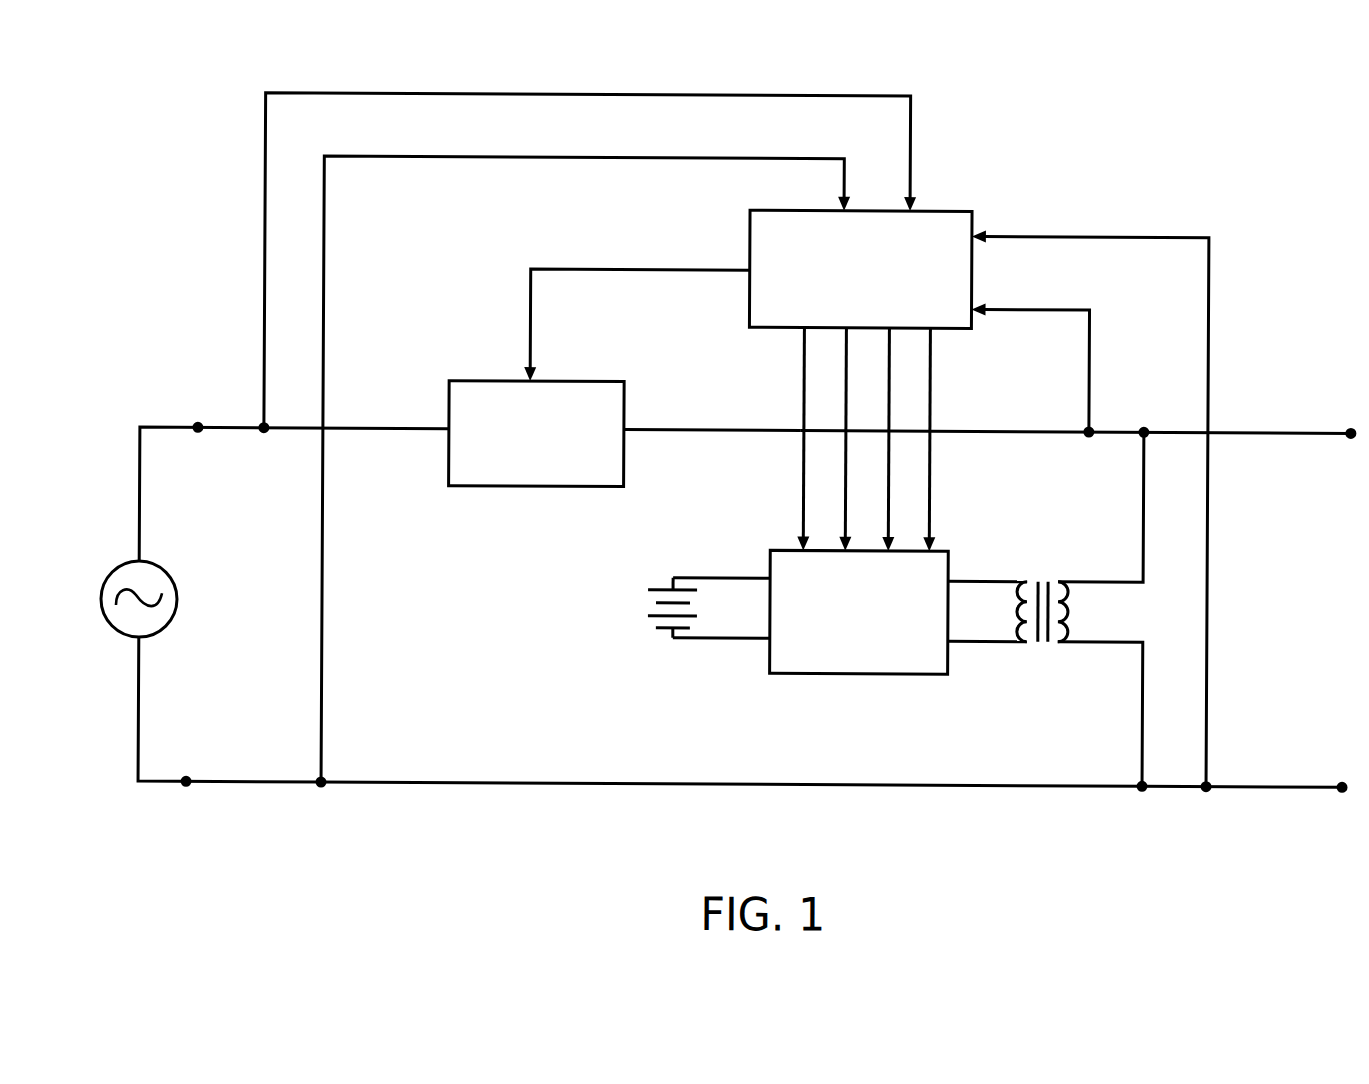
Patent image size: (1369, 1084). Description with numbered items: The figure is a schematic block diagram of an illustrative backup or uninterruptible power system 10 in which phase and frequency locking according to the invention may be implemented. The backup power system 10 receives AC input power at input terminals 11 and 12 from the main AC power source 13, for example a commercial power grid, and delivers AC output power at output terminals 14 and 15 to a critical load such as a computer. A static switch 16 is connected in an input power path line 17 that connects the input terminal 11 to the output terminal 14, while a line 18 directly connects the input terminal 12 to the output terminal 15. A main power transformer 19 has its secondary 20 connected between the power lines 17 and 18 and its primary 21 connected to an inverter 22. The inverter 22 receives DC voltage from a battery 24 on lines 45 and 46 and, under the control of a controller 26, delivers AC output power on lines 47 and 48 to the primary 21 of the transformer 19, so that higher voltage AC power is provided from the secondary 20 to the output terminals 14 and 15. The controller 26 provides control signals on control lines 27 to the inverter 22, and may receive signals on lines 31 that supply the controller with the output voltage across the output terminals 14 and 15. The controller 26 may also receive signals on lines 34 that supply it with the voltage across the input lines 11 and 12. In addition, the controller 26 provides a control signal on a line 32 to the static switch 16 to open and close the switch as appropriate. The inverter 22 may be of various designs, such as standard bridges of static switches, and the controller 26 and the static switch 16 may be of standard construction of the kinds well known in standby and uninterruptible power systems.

The backup power system 10 is at (1032, 226).
The input terminal 11 is at (228, 423).
The input terminal 12 is at (250, 786).
The main AC power source 13 is at (110, 578).
The output terminal 14 is at (1255, 428).
The output terminal 15 is at (1272, 787).
The static switch 16 is at (480, 380).
The input power path line 17 is at (712, 392).
The line 18 is at (490, 785).
The main power transformer 19 is at (1042, 645).
The secondary 20 is at (1070, 612).
The primary 21 is at (1028, 578).
The inverter 22 is at (818, 673).
The battery 24 is at (665, 580).
The controller 26 is at (925, 210).
The control lines 27 is at (803, 398).
The lines 31 is at (1070, 236).
The line 32 is at (676, 267).
The lines 34 is at (402, 95).
The line 45 is at (740, 576).
The line 46 is at (730, 640).
The line 47 is at (997, 578).
The line 48 is at (962, 642).